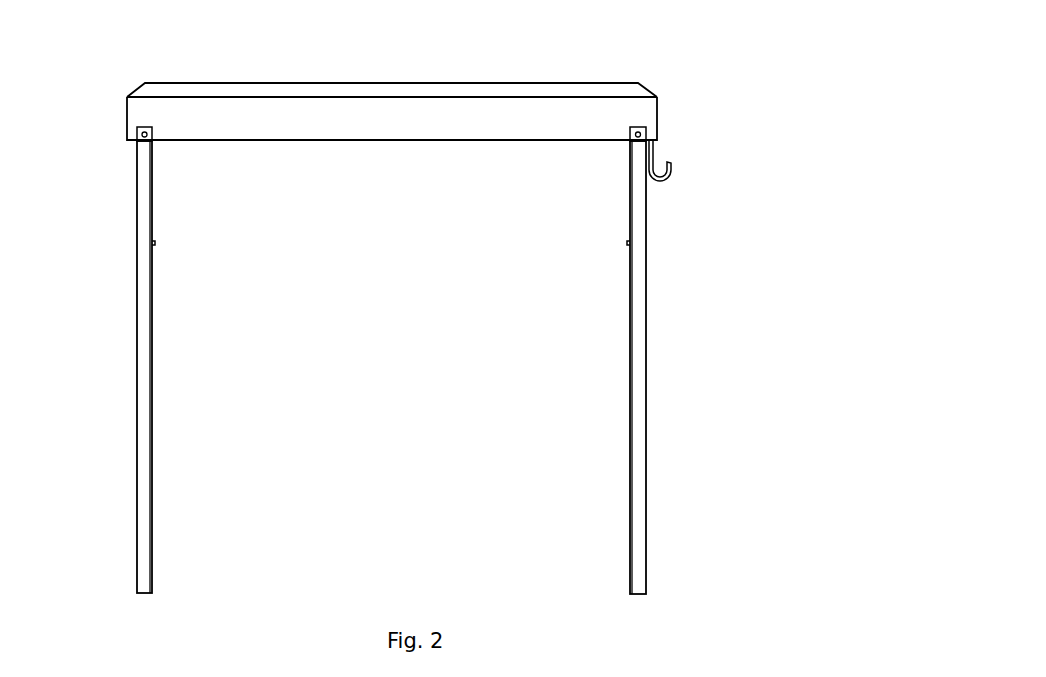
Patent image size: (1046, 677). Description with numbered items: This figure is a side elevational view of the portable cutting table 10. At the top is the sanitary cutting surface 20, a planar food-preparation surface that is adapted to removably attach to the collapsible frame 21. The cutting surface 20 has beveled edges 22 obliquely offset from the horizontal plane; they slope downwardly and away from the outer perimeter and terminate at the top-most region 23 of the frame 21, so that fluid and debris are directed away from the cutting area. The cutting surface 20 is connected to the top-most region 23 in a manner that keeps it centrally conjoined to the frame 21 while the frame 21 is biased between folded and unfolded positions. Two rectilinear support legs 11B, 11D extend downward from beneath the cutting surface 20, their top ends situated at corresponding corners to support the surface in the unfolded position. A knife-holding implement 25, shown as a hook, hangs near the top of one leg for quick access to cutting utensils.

The portable cutting table 10 is at (681, 147).
The cutting surface 20 is at (320, 85).
The collapsible frame 21 is at (112, 215).
The beveled edges 22 is at (493, 86).
The top-most region of the frame 23 is at (430, 128).
The knife-holding implements 25 is at (672, 178).
The support leg 11B is at (146, 422).
The support leg 11D is at (642, 373).